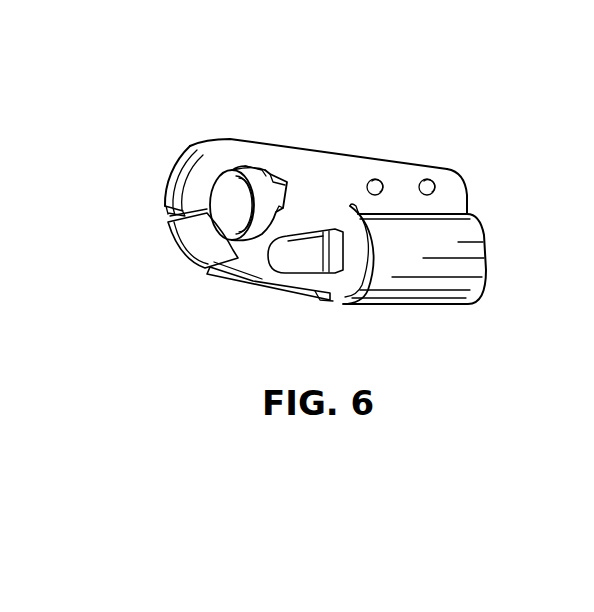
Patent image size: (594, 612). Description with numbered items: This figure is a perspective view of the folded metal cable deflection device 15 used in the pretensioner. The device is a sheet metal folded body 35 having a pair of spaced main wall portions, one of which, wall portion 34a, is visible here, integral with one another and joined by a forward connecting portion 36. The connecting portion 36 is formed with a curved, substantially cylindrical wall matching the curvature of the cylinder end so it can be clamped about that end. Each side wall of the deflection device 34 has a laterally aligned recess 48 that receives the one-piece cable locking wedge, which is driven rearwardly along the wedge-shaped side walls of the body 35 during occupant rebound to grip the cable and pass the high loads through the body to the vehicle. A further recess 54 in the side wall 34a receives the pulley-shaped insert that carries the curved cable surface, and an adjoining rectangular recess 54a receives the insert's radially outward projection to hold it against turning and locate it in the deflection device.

The cable deflection device 15 is at (512, 96).
The deflection device 34 is at (423, 166).
The main wall portion 34a is at (243, 172).
The recess 54 is at (222, 200).
The rectangular recess 54a is at (283, 182).
The recess 48 is at (300, 257).
The sheet metal folded body 35 is at (217, 281).
The forward connecting portion 36 is at (474, 232).